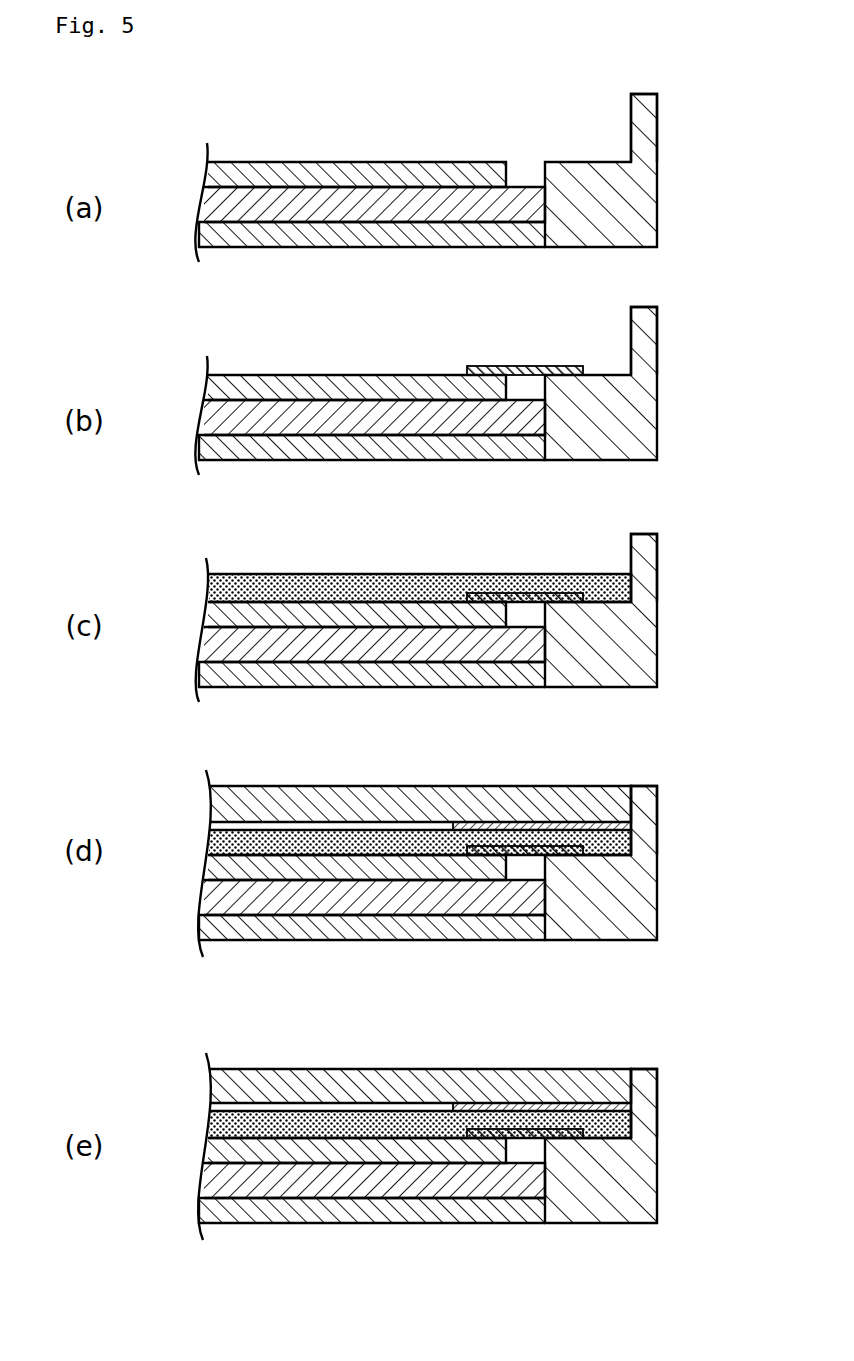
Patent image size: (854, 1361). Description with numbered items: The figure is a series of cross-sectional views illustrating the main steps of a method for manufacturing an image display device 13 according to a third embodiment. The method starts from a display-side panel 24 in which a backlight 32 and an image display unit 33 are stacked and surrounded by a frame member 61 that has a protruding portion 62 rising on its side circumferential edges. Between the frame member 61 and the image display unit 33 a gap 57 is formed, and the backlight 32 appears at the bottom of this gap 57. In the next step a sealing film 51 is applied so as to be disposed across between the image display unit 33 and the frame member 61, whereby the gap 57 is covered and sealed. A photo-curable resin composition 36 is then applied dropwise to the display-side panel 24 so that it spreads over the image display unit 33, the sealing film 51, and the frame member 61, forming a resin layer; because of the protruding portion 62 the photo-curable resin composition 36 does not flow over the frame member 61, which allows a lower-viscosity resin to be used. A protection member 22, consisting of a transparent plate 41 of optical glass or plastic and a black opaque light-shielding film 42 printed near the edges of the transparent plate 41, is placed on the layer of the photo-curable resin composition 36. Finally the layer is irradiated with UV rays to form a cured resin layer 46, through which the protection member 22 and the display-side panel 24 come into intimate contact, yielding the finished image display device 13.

The image display device 13 is at (153, 1048).
The protection member 22 is at (620, 775).
The display-side panel 24 is at (672, 185).
The backlight 32 is at (205, 211).
The image display unit 33 is at (208, 178).
The photo-curable resin composition 36 is at (208, 586).
The transparent plate 41 is at (210, 806).
The light-shielding film 42 is at (600, 828).
The cured resin layer 46 is at (210, 1122).
The sealing film 51 is at (560, 366).
The gap 57 is at (523, 173).
The frame member 61 is at (658, 223).
The protruding portion 62 is at (658, 110).